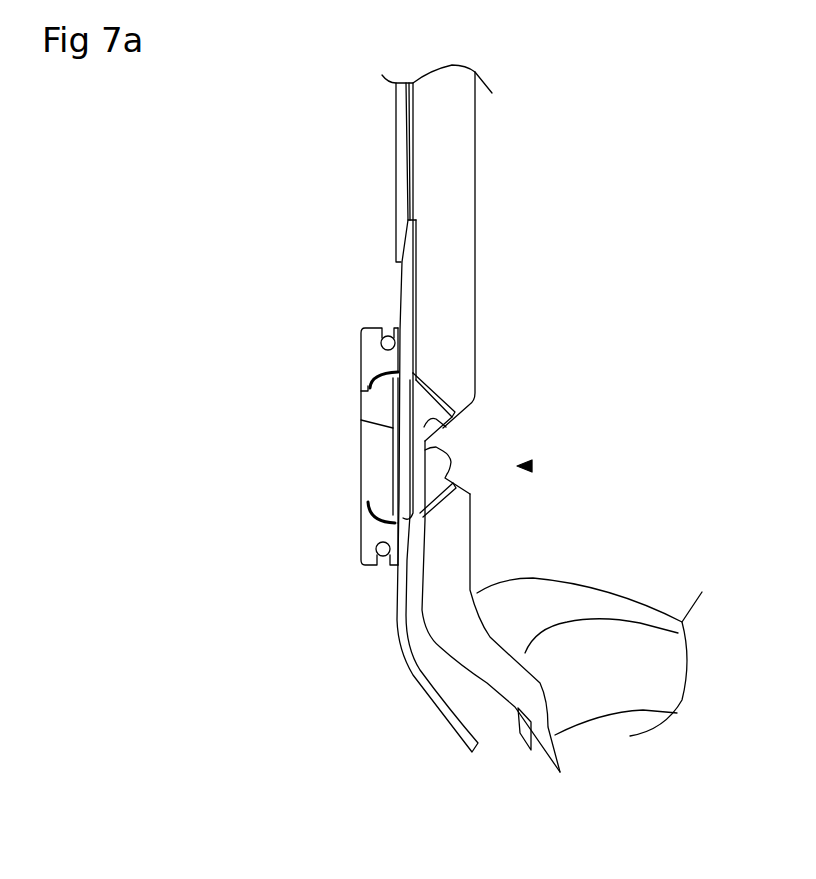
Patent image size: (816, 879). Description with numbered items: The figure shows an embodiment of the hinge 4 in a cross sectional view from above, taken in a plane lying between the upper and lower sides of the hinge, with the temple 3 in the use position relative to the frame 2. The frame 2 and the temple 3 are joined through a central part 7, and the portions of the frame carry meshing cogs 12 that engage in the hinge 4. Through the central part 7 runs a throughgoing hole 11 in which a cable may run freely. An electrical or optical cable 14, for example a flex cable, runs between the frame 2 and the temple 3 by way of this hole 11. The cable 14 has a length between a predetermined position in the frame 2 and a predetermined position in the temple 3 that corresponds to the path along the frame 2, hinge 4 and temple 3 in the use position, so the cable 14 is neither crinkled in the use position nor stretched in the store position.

The frame 2 is at (445, 582).
The temple 3 is at (453, 155).
The hinge 4 is at (532, 466).
The central part 7 is at (372, 467).
The throughgoing hole 11 is at (397, 427).
The meshing cogs 12 is at (450, 447).
The electrical or optical cable 14 is at (397, 625).